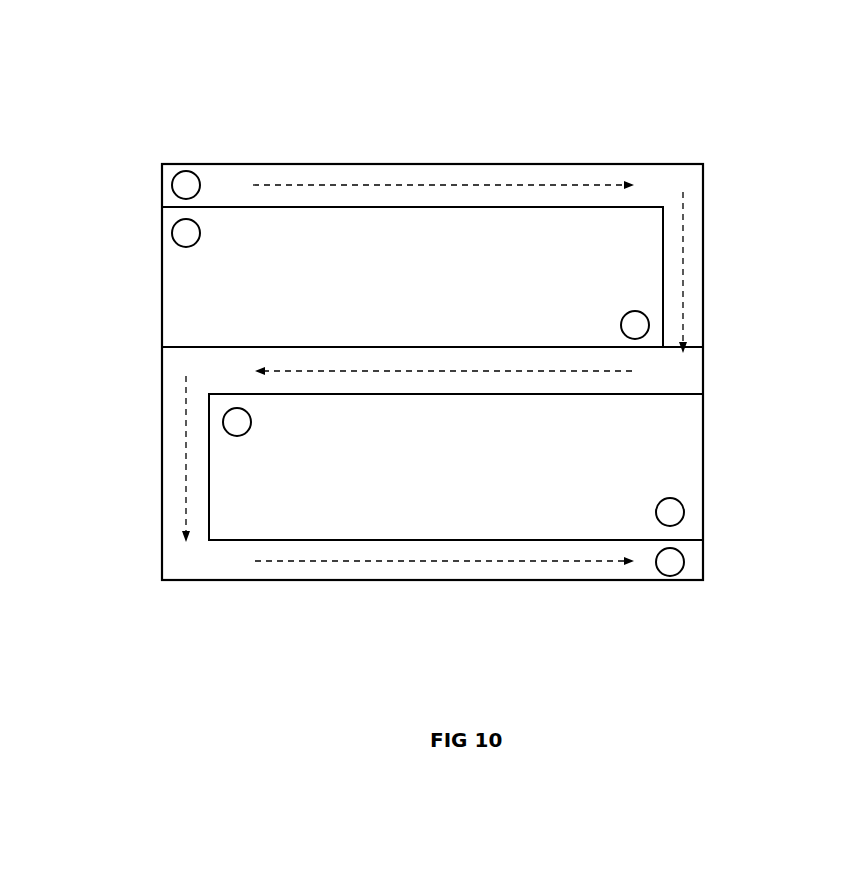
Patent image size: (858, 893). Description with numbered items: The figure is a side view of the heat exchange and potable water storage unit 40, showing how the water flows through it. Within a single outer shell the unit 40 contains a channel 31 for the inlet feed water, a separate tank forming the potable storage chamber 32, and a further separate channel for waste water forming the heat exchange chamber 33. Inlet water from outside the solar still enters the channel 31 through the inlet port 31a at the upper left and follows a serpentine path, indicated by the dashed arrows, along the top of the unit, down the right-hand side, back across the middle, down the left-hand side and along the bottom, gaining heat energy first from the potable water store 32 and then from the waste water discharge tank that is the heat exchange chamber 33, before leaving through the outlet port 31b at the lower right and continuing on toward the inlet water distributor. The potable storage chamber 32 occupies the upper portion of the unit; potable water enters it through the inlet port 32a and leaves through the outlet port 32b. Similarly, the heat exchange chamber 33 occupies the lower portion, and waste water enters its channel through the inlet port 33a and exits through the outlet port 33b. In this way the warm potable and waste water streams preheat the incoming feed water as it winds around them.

The heat exchange and potable water storage unit 40 is at (748, 143).
The channel 31 is at (690, 357).
The inlet port 31a is at (185, 172).
The outlet port 31b is at (662, 572).
The potable storage chamber 32 is at (648, 232).
The inlet port 32a is at (175, 248).
The outlet port 32b is at (649, 325).
The heat exchange chamber 33 is at (683, 440).
The inlet port 33a is at (227, 433).
The outlet port 33b is at (685, 512).